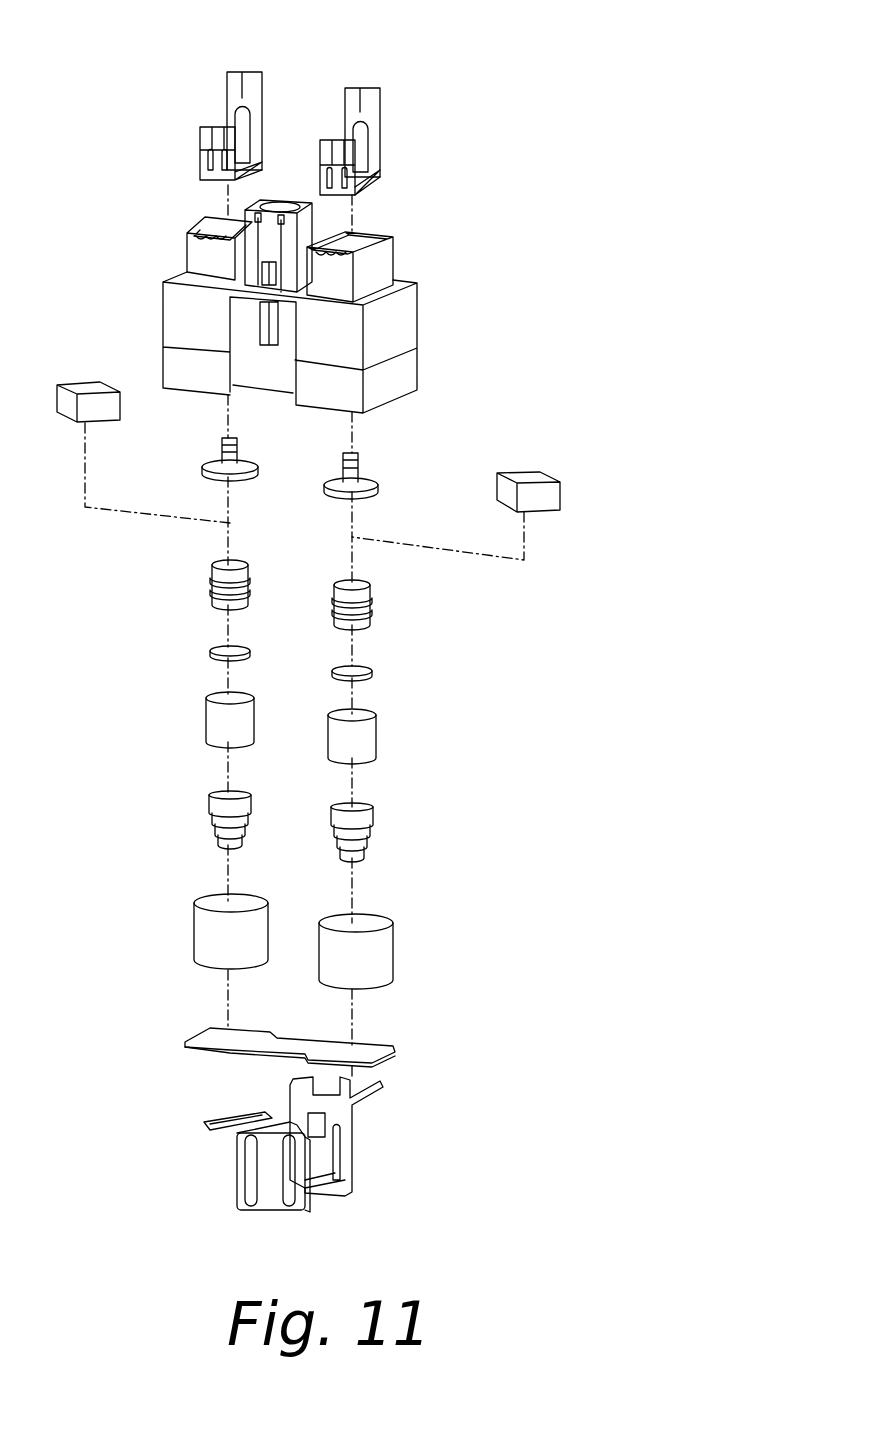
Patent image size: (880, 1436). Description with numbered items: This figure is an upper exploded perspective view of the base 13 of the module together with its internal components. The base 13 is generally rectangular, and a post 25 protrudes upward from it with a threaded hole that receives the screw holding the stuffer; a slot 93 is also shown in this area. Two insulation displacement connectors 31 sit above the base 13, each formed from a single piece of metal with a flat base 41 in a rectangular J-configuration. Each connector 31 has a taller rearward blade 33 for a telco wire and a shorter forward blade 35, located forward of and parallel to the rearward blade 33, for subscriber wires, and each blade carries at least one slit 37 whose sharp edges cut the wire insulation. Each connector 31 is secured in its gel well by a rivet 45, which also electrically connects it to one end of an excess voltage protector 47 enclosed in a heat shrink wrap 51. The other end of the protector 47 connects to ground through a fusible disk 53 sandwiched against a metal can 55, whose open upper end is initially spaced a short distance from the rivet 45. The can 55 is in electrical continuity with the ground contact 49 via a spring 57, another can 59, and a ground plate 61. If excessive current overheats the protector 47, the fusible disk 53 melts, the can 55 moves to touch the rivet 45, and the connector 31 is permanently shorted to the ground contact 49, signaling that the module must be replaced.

The base 13 is at (333, 296).
The post 25 is at (247, 211).
The insulation displacement connector 31 is at (400, 102).
The rearward blade 33 is at (232, 78).
The forward blade 35 is at (207, 132).
The slit 37 is at (353, 97).
The flat base 41 is at (397, 187).
The rivet 45 is at (367, 473).
The excess voltage protector 47 is at (370, 603).
The ground contact 49 is at (352, 1120).
The heat shrink wrap 51 is at (535, 497).
The fusible disk 53 is at (365, 673).
The metal can 55 is at (360, 738).
The spring 57 is at (378, 828).
The can 59 is at (378, 957).
The ground plate 61 is at (373, 1047).
The slot 93 is at (372, 232).